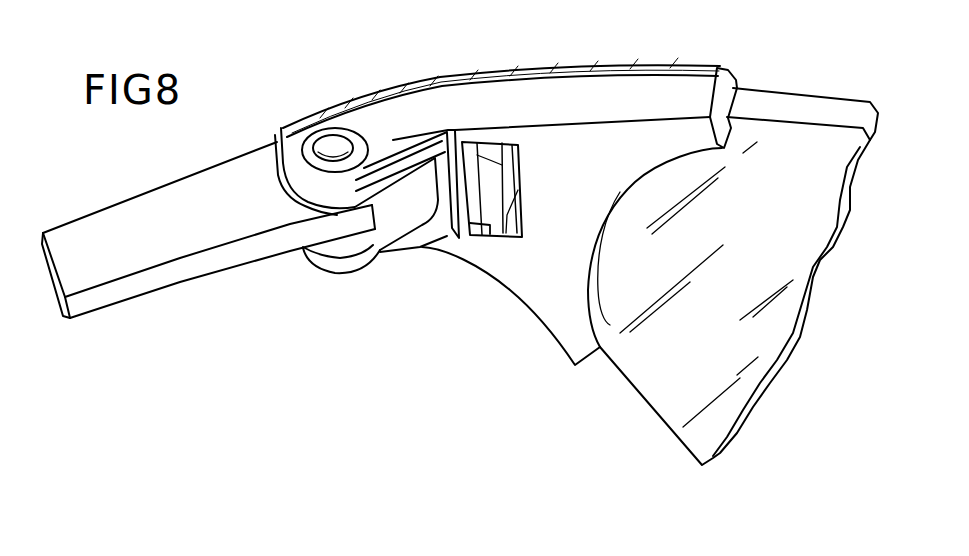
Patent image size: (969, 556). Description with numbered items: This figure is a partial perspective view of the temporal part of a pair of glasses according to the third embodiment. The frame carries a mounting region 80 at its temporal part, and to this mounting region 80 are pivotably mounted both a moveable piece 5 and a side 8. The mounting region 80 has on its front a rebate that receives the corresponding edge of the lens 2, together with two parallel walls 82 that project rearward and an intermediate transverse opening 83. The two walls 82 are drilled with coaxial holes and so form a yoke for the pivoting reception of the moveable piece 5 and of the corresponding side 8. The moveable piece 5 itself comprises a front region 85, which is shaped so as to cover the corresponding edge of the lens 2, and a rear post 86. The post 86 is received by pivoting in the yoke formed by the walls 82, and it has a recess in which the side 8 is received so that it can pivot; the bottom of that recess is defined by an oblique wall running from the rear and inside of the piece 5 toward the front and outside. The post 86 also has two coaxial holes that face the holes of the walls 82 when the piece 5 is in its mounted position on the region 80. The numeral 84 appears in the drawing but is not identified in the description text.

The side 8 is at (132, 216).
The moveable piece 5 is at (664, 62).
The front region 85 is at (737, 74).
The rear post 86 is at (392, 222).
The parallel walls 82 is at (367, 177).
The intermediate transverse opening 83 is at (521, 222).
The ledge of locking block 84 is at (487, 222).
The mounting region 80 is at (538, 323).
The lens 2 is at (738, 372).